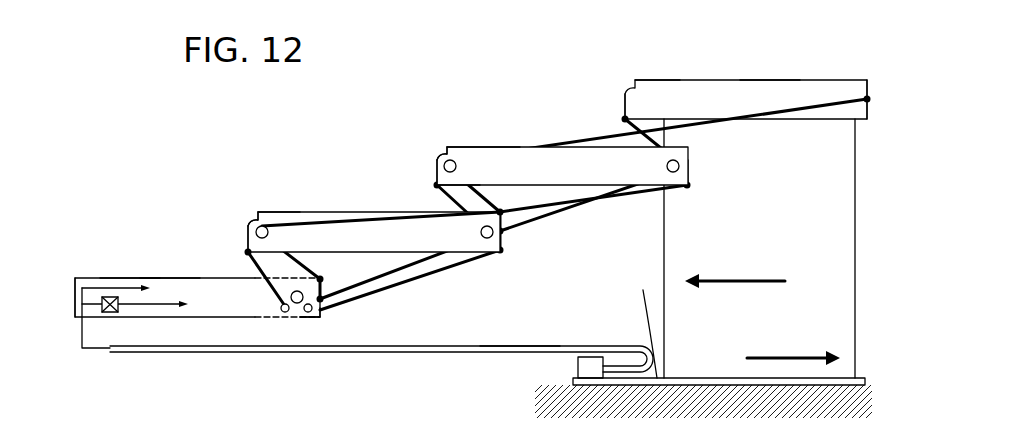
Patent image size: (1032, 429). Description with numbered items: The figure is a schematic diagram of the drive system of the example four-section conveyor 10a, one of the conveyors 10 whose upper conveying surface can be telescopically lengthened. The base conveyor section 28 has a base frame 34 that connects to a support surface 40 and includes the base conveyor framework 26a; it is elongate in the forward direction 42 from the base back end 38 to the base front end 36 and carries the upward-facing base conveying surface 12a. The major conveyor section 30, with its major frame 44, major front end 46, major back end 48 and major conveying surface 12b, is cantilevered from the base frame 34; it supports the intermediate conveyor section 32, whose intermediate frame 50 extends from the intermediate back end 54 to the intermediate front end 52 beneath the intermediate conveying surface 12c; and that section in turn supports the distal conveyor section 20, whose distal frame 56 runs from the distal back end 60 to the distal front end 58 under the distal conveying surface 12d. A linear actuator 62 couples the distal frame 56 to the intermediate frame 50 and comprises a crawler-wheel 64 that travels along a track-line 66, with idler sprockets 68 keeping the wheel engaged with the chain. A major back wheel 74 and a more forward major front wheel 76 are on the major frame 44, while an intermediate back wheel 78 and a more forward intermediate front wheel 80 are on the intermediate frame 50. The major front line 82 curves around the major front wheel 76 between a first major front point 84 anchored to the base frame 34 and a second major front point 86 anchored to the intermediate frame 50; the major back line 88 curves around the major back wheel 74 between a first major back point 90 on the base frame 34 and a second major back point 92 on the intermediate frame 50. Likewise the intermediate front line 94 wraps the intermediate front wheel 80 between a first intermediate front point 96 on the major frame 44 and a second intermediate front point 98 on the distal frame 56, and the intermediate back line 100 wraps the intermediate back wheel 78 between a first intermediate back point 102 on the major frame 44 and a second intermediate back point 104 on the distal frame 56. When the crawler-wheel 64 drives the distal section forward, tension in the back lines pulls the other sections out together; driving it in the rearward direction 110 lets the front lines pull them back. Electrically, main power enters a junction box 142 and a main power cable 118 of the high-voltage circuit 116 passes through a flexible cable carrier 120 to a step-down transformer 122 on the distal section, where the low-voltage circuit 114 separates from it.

The conveyor 10 is at (152, 118).
The four-section conveyor 10a is at (122, 152).
The base conveying surface 12a is at (714, 80).
The major conveying surface 12b is at (450, 148).
The intermediate conveying surface 12c is at (290, 212).
The distal conveying surface 12d is at (130, 272).
The distal conveyor section 20 is at (172, 277).
The base conveyor framework 26a is at (664, 288).
The base conveyor section 28 is at (653, 80).
The major conveyor section 30 is at (437, 158).
The intermediate conveyor section 32 is at (280, 212).
The base frame 34 is at (770, 80).
The base front end 36 is at (623, 95).
The base back end 38 is at (868, 85).
The support surface 40 is at (530, 354).
The forward direction 42 is at (743, 281).
The major frame 44 is at (470, 147).
The major front end 46 is at (437, 168).
The major back end 48 is at (689, 174).
The intermediate frame 50 is at (260, 212).
The intermediate front end 52 is at (248, 240).
The intermediate back end 54 is at (507, 248).
The distal frame 56 is at (155, 277).
The distal front end 58 is at (73, 282).
The distal back end 60 is at (326, 315).
The linear actuator 62 is at (290, 310).
The crawler-wheel 64 is at (300, 292).
The track-line 66 is at (268, 287).
The idler sprocket 68 is at (284, 302).
The major back wheel 74 is at (681, 163).
The major front wheel 76 is at (458, 166).
The intermediate back wheel 78 is at (480, 232).
The intermediate front wheel 80 is at (269, 232).
The major front line 82 is at (587, 140).
The first major front point 84 is at (867, 99).
The second major front point 86 is at (530, 207).
The major back line 88 is at (653, 132).
The first major back point 90 is at (623, 108).
The second major back point 92 is at (503, 233).
The intermediate front line 94 is at (310, 212).
The first intermediate front point 96 is at (688, 188).
The second intermediate front point 98 is at (332, 286).
The intermediate back line 100 is at (437, 185).
The first intermediate back point 102 is at (437, 177).
The second intermediate back point 104 is at (350, 287).
The rearward direction 110 is at (818, 355).
The low-voltage circuit 114 is at (173, 306).
The high-voltage circuit 116 is at (100, 288).
The main power cable 118 is at (96, 350).
The flexible cable carrier 120 is at (513, 344).
The step-down transformer 122 is at (110, 313).
The junction box 142 is at (585, 357).